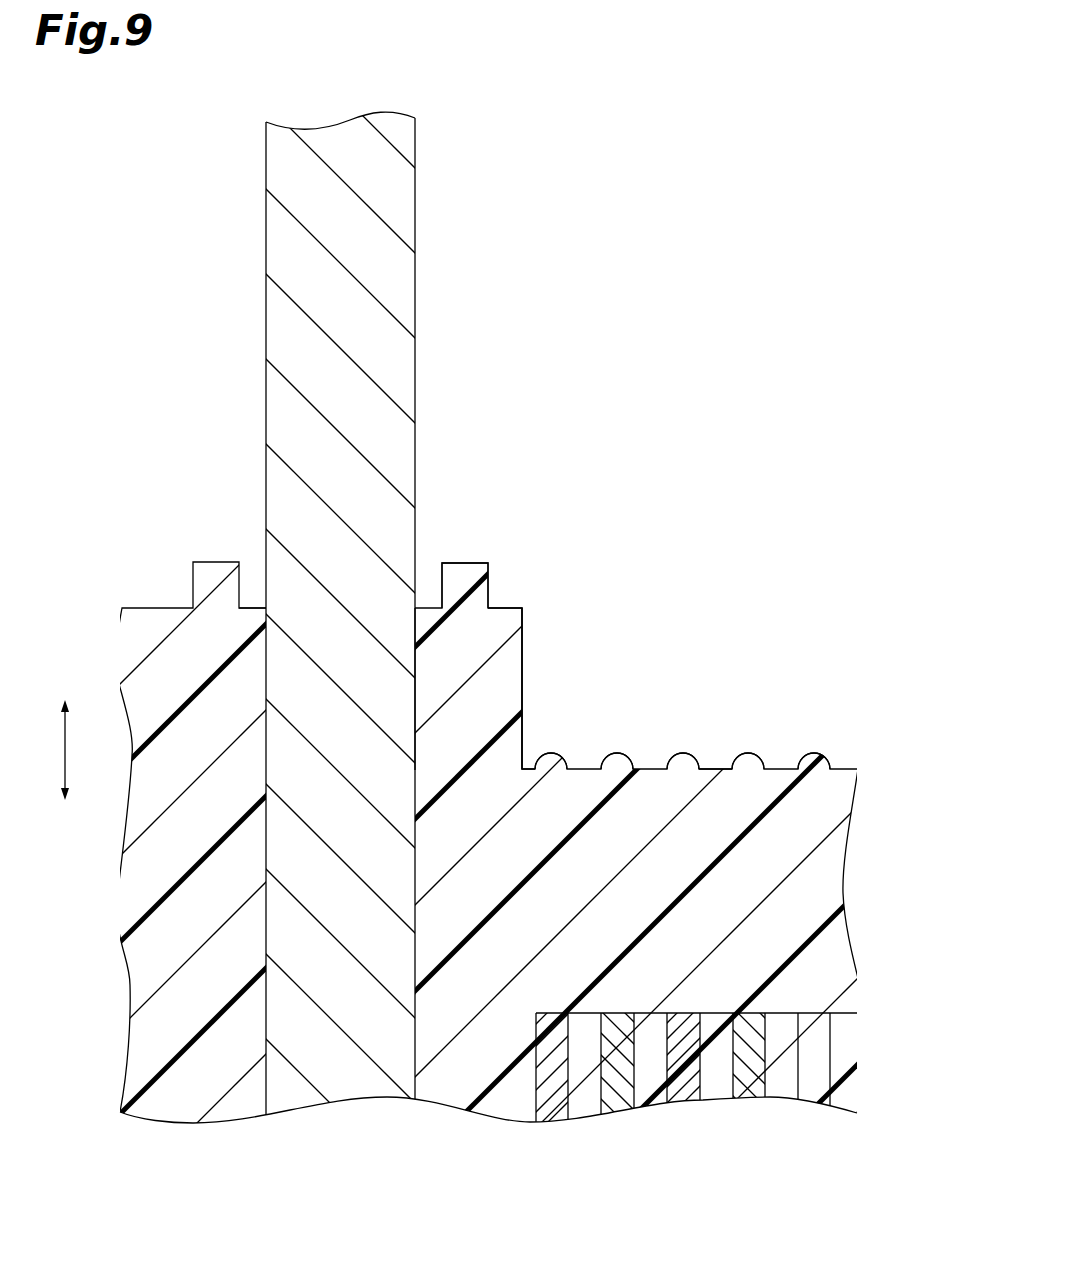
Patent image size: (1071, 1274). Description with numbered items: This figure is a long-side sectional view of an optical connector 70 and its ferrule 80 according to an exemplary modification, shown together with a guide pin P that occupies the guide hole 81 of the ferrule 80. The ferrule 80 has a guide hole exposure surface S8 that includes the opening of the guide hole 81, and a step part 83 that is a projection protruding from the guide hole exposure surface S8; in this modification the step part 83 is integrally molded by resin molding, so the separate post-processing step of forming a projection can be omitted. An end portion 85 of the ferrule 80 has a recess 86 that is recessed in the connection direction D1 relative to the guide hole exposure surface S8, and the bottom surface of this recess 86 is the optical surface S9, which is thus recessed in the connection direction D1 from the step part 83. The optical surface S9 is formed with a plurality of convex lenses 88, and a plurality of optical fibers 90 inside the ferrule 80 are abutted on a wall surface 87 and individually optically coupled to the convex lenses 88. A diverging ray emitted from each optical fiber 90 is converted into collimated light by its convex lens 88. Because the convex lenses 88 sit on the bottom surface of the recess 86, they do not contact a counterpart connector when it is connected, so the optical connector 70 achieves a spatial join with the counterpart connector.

The guide pin P is at (388, 268).
The optical connector 70 is at (535, 637).
The ferrule 80 is at (535, 637).
The guide hole 81 is at (415, 656).
The step part 83 is at (462, 578).
The end portion 85 is at (610, 658).
The recess 86 is at (524, 663).
The wall surface 87 is at (703, 1071).
The convex lenses 88 is at (617, 753).
The optical fibers 90 is at (535, 637).
The guide hole exposure surface S8 is at (263, 606).
The optical surface S9 is at (711, 768).
The connection direction D1 is at (49, 750).